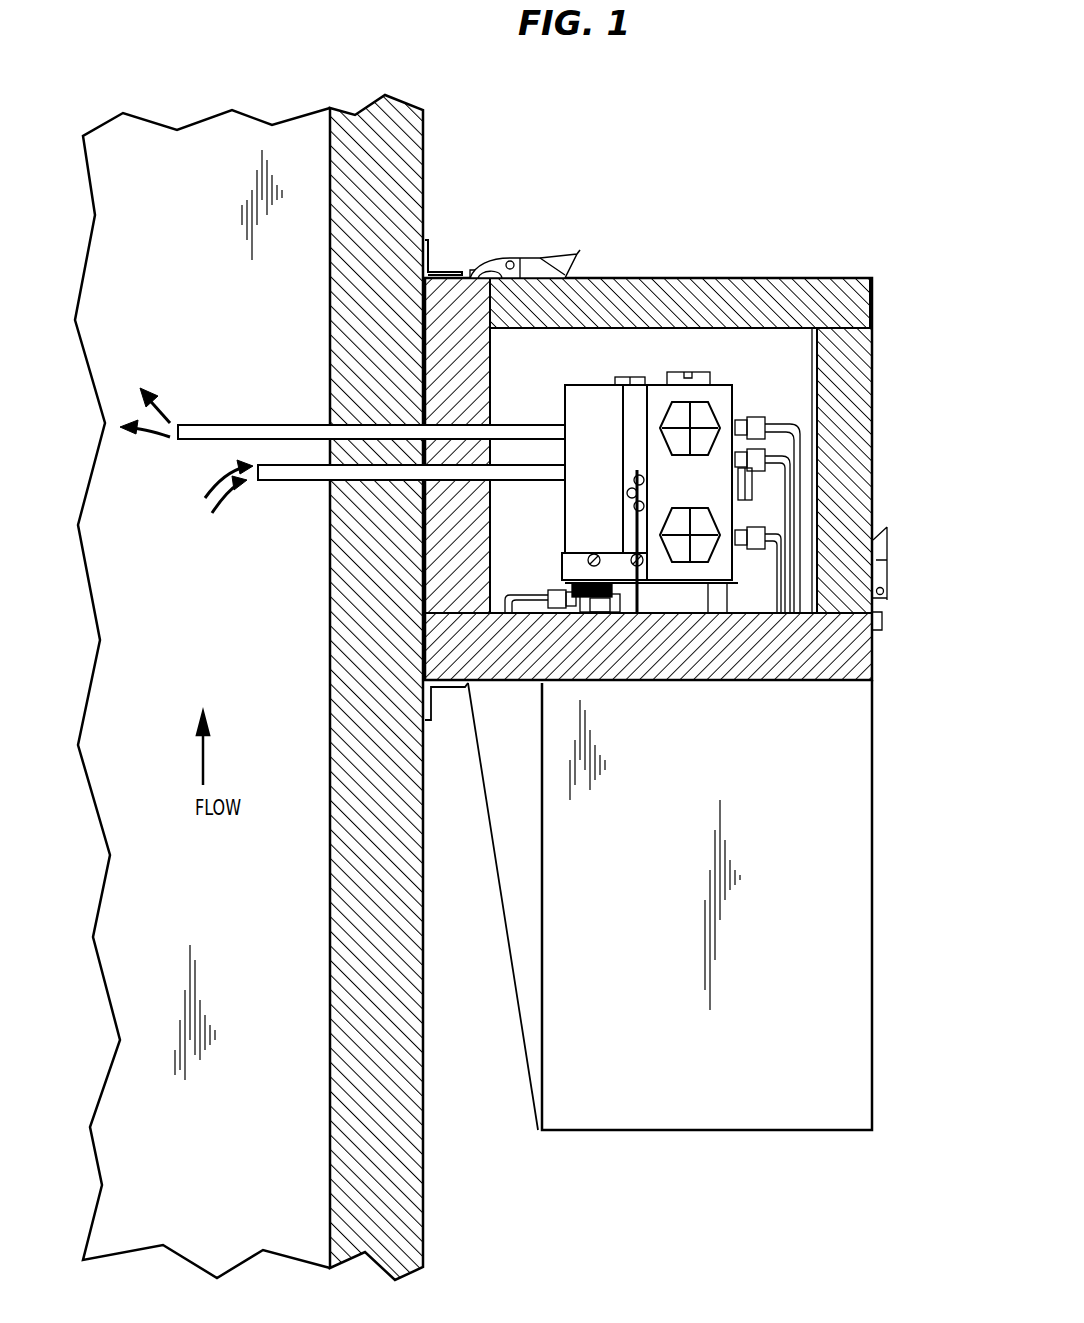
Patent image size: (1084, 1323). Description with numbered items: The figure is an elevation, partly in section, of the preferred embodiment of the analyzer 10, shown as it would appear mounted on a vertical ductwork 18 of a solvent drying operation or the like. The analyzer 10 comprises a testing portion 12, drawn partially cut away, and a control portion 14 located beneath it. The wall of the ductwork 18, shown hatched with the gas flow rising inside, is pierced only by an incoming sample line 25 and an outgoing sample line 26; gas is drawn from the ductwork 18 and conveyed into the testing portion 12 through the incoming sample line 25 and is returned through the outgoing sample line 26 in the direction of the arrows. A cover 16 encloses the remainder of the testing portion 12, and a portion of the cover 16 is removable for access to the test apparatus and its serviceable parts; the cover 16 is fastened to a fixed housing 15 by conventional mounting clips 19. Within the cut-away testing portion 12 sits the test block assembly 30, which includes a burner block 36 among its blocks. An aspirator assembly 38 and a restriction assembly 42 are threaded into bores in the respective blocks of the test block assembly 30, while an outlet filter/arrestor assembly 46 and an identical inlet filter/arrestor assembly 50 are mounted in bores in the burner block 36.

The analyzer 10 is at (800, 140).
The testing portion 12 is at (690, 448).
The control portion 14 is at (903, 1081).
The fixed housing 15 is at (447, 292).
The cover 16 is at (863, 415).
The vertical ductwork 18 is at (423, 1165).
The mounting clips 19 is at (527, 262).
The incoming sample line 25 is at (302, 480).
The outgoing sample line 26 is at (226, 425).
The test block assembly 30 is at (728, 398).
The burner block 36 is at (740, 350).
The aspirator assembly 38 is at (642, 377).
The restriction assembly 42 is at (700, 377).
The outlet filter/arrestor assembly 46 is at (710, 418).
The inlet filter/arrestor assembly 50 is at (700, 515).